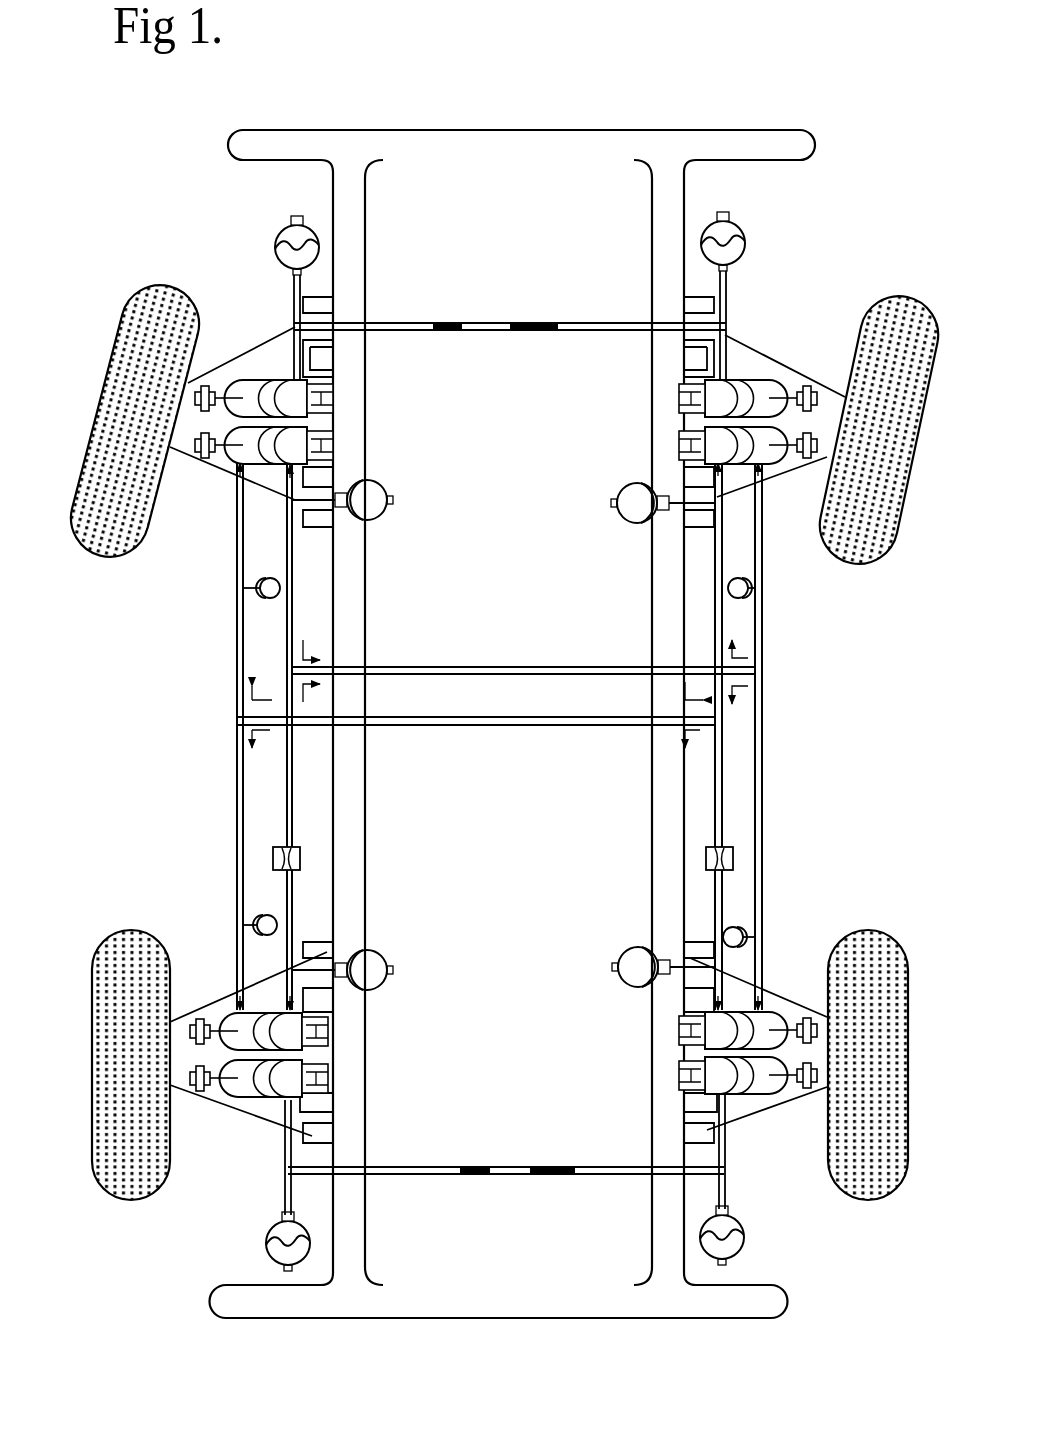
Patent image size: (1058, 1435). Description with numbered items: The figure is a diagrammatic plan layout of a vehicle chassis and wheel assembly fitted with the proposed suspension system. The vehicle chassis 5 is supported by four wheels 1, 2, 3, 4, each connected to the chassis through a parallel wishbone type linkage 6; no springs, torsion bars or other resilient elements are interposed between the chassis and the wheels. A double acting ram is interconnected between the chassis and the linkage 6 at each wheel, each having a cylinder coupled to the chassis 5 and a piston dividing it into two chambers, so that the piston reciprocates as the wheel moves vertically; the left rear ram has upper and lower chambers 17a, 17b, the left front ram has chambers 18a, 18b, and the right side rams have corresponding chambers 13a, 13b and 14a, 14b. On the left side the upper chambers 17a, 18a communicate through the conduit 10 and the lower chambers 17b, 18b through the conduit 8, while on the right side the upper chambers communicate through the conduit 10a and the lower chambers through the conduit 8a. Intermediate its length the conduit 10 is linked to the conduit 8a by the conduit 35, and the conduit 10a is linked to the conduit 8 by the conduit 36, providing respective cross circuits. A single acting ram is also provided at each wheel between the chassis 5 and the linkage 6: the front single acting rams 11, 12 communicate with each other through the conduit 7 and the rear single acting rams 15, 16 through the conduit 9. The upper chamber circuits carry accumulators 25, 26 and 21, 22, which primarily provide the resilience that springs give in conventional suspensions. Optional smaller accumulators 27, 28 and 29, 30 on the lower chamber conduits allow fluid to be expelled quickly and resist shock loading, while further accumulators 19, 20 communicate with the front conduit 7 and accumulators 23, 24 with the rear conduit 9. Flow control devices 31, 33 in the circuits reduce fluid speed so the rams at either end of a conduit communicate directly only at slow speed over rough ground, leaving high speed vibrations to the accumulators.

The wheel 1 is at (97, 562).
The wheel 2 is at (908, 294).
The wheel 3 is at (870, 940).
The wheel 4 is at (121, 1205).
The vehicle chassis 5 is at (692, 196).
The parallel wishbone type linkage 6 is at (268, 332).
The conduit 7 is at (580, 336).
The conduit 8 is at (233, 712).
The conduit 8a is at (768, 680).
The conduit 9 is at (470, 1180).
The conduit 10 is at (300, 766).
The conduit 10a is at (712, 624).
The single acting ram 11 is at (245, 378).
The single acting ram 12 is at (775, 386).
The upper chamber 13a is at (720, 432).
The lower chamber 13b is at (758, 462).
The upper chamber 14a is at (715, 1013).
The lower chamber 14b is at (772, 1010).
The single acting ram 15 is at (765, 1097).
The single acting ram 16 is at (230, 1100).
The upper chamber 17a is at (282, 1043).
The lower chamber 17b is at (240, 1013).
The upper chamber 18a is at (305, 422).
The lower chamber 18b is at (240, 464).
The accumulator 19 is at (276, 240).
The accumulator 20 is at (750, 241).
The accumulator 21 is at (623, 486).
The accumulator 22 is at (624, 995).
The accumulator 23 is at (748, 1241).
The accumulator 24 is at (262, 1248).
The accumulator 25 is at (386, 993).
The accumulator 26 is at (390, 488).
The accumulator 27 is at (746, 597).
The accumulator 28 is at (745, 926).
The accumulator 29 is at (258, 917).
The accumulator 30 is at (262, 596).
The flow control device 31 is at (736, 851).
The flow control device 33 is at (272, 850).
The conduit 35 is at (506, 664).
The conduit 36 is at (496, 730).